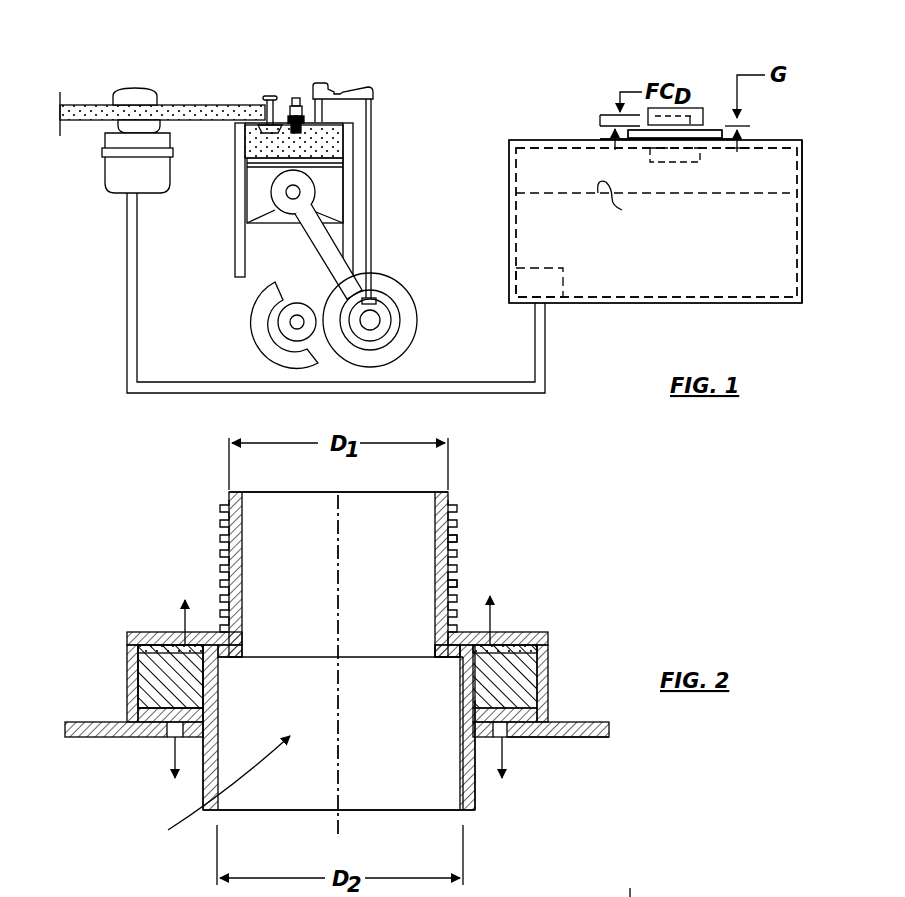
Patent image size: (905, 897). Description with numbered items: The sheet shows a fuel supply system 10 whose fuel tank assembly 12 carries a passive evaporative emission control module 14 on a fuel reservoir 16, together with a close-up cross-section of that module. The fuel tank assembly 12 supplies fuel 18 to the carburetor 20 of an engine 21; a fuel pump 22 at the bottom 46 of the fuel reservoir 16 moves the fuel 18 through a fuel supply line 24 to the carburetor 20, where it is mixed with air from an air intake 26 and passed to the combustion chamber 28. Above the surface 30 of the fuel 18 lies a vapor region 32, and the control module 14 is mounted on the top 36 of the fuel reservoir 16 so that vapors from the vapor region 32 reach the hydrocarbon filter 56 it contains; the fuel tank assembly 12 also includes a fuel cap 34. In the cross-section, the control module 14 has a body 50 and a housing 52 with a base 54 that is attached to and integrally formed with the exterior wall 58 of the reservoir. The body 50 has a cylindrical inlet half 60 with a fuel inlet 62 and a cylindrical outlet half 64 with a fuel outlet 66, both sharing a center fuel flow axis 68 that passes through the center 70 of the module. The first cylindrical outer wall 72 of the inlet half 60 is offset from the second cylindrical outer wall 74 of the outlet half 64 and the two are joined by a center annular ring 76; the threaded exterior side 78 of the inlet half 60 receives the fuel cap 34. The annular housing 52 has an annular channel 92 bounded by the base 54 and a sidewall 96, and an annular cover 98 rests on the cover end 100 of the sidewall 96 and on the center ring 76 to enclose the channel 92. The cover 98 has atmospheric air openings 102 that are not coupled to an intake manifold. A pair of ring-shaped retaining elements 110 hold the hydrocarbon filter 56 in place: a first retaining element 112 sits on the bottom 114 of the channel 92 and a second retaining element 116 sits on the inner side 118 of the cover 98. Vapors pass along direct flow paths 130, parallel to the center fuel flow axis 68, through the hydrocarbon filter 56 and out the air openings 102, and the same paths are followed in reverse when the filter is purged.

In FIG. 1, the fuel supply system 10 is at (607, 85).
In FIG. 1, the fuel tank assembly 12 is at (800, 139).
In FIG. 1, the passive evaporative emission control module 14 is at (575, 140).
In FIG. 2, the passive evaporative emission control module 14 is at (452, 492).
In FIG. 1, the fuel reservoir 16 is at (803, 210).
In FIG. 1, the fuel 18 is at (700, 193).
In FIG. 1, the carburetor 20 is at (150, 196).
In FIG. 1, the engine 21 is at (332, 78).
In FIG. 1, the fuel pump 22 is at (562, 268).
In FIG. 1, the fuel supply line 24 is at (546, 386).
In FIG. 1, the air intake 26 is at (72, 137).
In FIG. 1, the combustion chamber 28 is at (248, 141).
In FIG. 1, the surface 30 is at (626, 203).
In FIG. 1, the vapor region 32 is at (656, 221).
In FIG. 2, the vapor region 32 is at (339, 754).
In FIG. 1, the fuel cap 34 is at (698, 108).
In FIG. 1, the top 36 is at (573, 141).
In FIG. 1, the bottom 46 is at (710, 296).
In FIG. 2, the body 50 is at (222, 534).
In FIG. 2, the housing 52 is at (138, 684).
In FIG. 2, the base 54 is at (88, 738).
In FIG. 2, the hydrocarbon filter 56 is at (548, 685).
In FIG. 1, the exterior wall 58 is at (768, 140).
In FIG. 2, the inlet half 60 is at (455, 547).
In FIG. 2, the fuel inlet 62 is at (260, 492).
In FIG. 2, the outlet half 64 is at (475, 782).
In FIG. 2, the fuel outlet 66 is at (270, 812).
In FIG. 2, the center fuel flow axis 68 is at (340, 534).
In FIG. 2, the center 70 is at (220, 808).
In FIG. 2, the first cylindrical outer wall 72 is at (455, 510).
In FIG. 2, the second cylindrical outer wall 74 is at (203, 782).
In FIG. 2, the center annular ring 76 is at (200, 604).
In FIG. 2, the exterior side 78 is at (455, 585).
In FIG. 2, the annular channel 92 is at (525, 738).
In FIG. 2, the sidewall 96 is at (550, 712).
In FIG. 2, the cover 98 is at (545, 628).
In FIG. 2, the cover end 100 is at (135, 650).
In FIG. 2, the atmospheric air openings 102 is at (583, 896).
In FIG. 2, the retaining elements 110 is at (150, 686).
In FIG. 2, the first retaining element 112 is at (206, 693).
In FIG. 2, the bottom 114 is at (465, 705).
In FIG. 2, the second retaining element 116 is at (205, 668).
In FIG. 2, the inner side 118 is at (445, 656).
In FIG. 2, the direct flow paths 130 is at (168, 750).